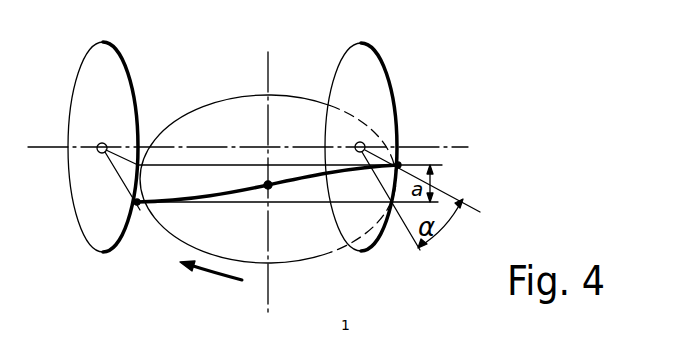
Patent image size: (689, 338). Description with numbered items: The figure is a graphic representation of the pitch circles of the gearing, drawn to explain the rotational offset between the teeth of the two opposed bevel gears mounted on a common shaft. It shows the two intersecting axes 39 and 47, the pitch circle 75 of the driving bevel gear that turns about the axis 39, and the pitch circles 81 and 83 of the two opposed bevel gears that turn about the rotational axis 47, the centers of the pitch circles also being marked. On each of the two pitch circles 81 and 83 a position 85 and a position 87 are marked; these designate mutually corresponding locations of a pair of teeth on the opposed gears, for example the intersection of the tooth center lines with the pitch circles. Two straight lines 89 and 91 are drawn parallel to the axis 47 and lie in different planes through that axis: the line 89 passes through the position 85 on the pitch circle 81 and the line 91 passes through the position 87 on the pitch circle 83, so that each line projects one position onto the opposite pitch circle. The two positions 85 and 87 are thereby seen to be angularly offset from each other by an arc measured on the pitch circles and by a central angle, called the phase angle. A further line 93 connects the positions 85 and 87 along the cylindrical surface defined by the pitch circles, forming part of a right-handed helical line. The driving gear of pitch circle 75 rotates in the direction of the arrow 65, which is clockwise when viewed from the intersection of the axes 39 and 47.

The axis 39 is at (268, 60).
The rotational axis 47 is at (446, 146).
The arrow 65 is at (222, 278).
The pitch circle 75 is at (196, 103).
The pitch circle 81 is at (384, 62).
The pitch circle 83 is at (124, 52).
The position 85 is at (405, 165).
The position 87 is at (137, 210).
The straight line 89 is at (300, 165).
The straight line 91 is at (282, 206).
The line 93 is at (212, 203).